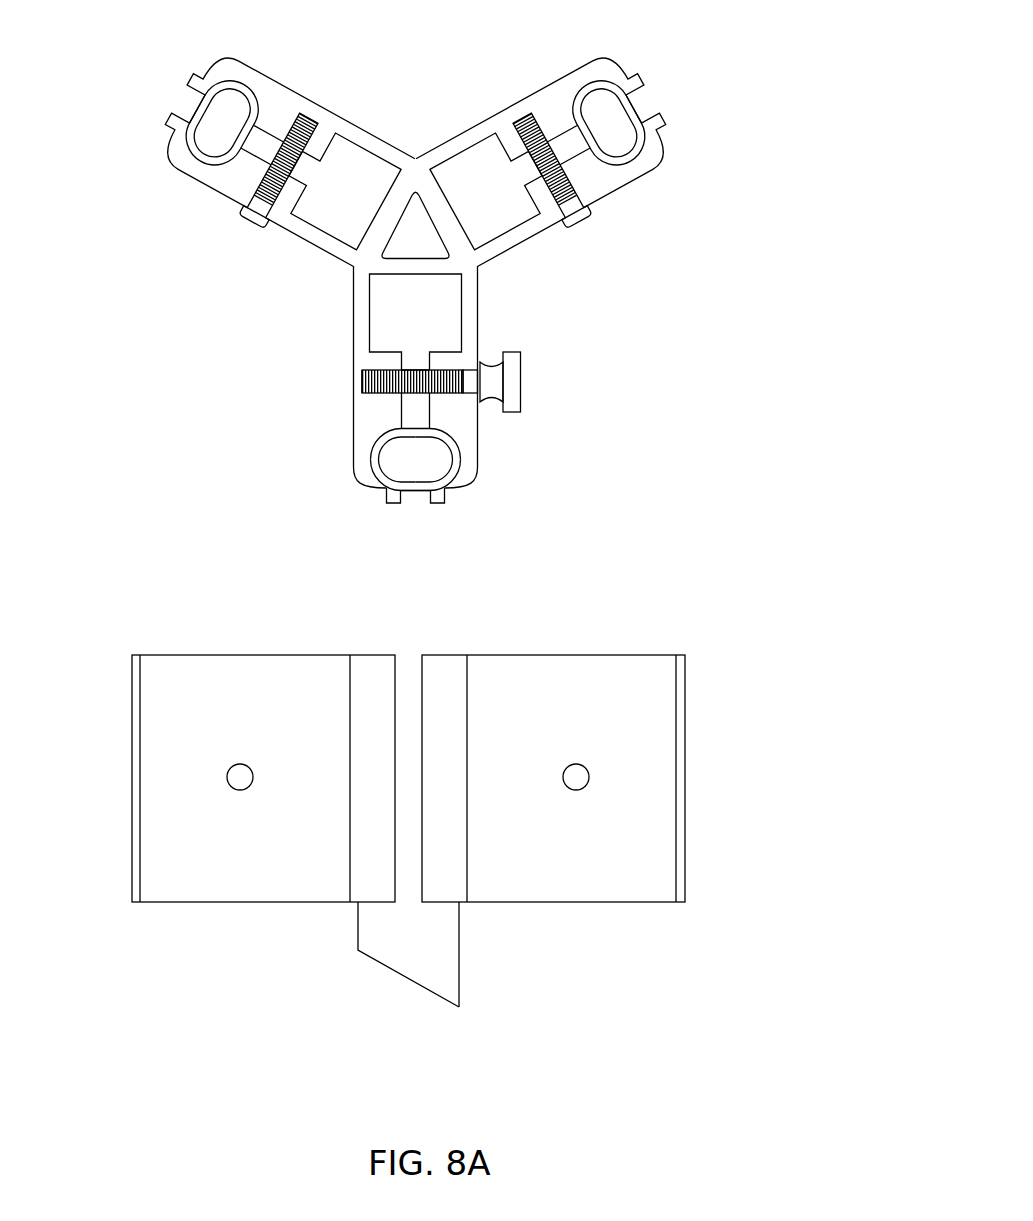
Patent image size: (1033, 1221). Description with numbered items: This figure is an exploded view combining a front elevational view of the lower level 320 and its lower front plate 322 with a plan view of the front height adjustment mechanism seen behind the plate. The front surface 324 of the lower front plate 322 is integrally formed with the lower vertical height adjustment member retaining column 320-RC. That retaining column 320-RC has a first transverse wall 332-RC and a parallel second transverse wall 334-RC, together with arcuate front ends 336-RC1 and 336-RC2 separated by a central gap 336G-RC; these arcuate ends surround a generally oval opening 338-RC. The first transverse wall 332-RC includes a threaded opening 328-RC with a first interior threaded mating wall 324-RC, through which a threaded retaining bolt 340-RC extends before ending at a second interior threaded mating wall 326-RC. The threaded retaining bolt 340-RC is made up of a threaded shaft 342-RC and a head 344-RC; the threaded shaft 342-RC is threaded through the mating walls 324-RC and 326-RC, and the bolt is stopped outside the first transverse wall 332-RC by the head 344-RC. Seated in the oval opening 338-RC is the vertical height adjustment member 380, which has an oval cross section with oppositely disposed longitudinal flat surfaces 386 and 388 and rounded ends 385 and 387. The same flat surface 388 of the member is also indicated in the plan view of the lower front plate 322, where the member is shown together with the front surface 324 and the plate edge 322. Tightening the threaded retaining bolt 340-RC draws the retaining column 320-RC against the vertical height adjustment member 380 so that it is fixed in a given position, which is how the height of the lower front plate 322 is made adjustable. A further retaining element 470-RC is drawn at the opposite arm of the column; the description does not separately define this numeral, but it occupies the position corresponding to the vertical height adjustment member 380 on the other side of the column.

The rod 470-RC is at (215, 108).
The vertical height adjustment member 380 is at (622, 117).
The second transverse wall 334-RC is at (362, 312).
The threaded shaft 342-RC is at (446, 368).
The first interior threaded mating wall 324-RC is at (460, 367).
The first transverse wall 332-RC is at (481, 357).
The second interior threaded mating wall 326-RC is at (363, 374).
The head 344-RC is at (520, 381).
The threaded retaining bolt 340-RC is at (492, 390).
The longitudinal flat surface 388 is at (410, 432).
The threaded opening 328-RC is at (477, 407).
The rounded end 387 is at (390, 467).
The rounded end 385 is at (460, 460).
The generally oval opening 338-RC is at (376, 474).
The longitudinal flat surface 386 is at (457, 483).
The arcuate front end 336-RC2 is at (380, 496).
The central gap 336G-RC is at (422, 502).
The arcuate front end 336-RC1 is at (450, 500).
The front surface 324 is at (545, 668).
The lower front plate 322 is at (662, 668).
The lower vertical height adjustment member retaining column 320-RC is at (480, 745).
The lower level 320 is at (708, 752).